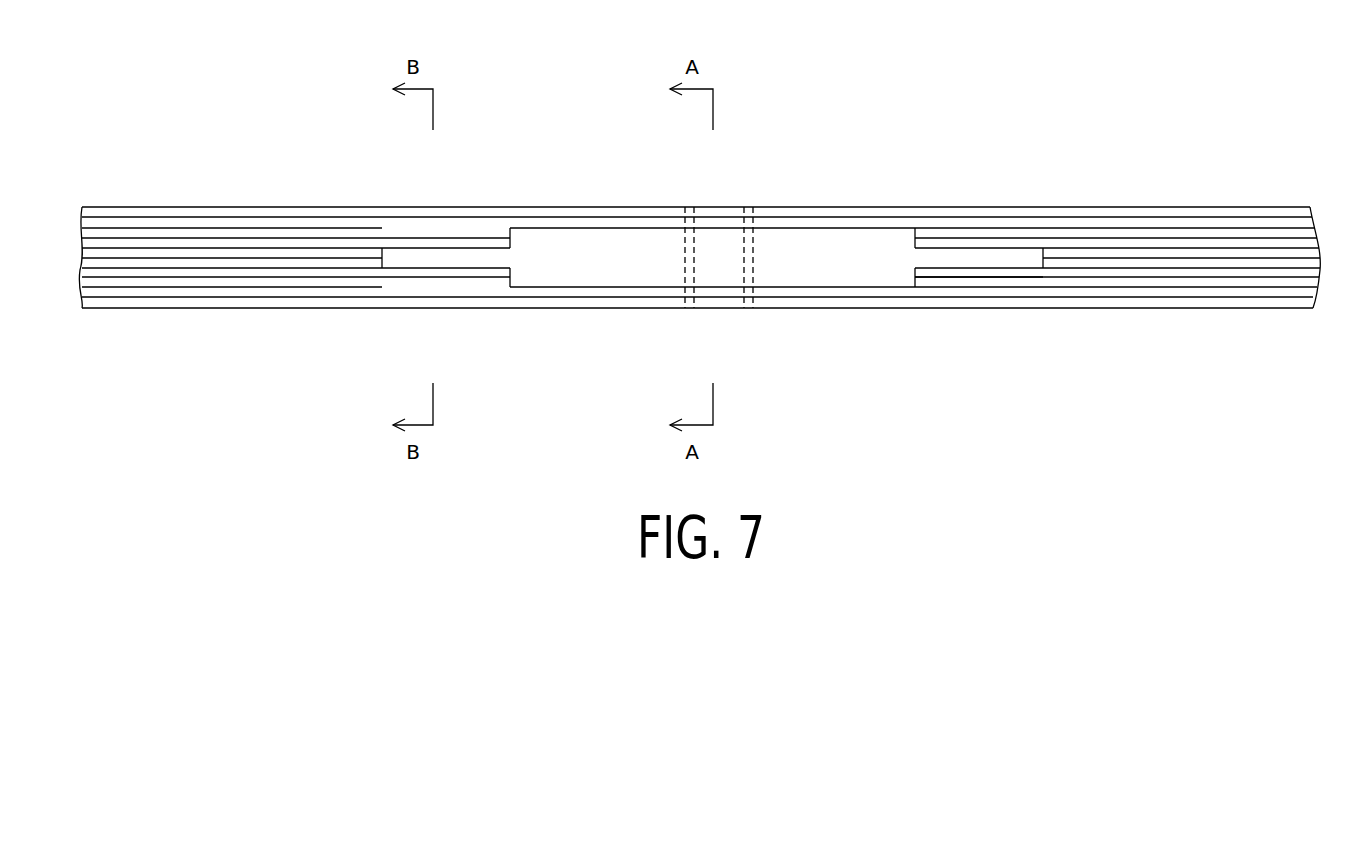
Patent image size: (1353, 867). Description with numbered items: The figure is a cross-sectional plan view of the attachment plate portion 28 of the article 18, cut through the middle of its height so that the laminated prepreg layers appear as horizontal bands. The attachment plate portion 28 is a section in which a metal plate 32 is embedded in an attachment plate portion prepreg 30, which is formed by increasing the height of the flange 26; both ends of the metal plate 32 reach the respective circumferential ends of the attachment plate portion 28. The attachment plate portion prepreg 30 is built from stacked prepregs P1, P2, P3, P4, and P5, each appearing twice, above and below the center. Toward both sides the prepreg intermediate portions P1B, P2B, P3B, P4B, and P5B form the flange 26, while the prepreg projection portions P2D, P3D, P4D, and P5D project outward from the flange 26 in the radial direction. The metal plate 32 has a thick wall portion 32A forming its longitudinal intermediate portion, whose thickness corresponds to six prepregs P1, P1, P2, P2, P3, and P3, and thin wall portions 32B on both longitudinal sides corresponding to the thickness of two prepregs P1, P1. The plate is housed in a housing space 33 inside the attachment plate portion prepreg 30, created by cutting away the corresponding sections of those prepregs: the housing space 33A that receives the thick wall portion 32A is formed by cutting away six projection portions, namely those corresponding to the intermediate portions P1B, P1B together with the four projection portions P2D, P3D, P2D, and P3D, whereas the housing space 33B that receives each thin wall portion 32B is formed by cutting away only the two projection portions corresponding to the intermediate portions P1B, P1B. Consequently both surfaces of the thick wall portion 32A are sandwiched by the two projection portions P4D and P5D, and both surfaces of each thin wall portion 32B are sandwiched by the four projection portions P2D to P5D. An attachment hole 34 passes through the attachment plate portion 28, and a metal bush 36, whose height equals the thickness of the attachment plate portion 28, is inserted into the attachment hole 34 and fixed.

The wiring board 18 is at (570, 113).
The flange 26 is at (143, 207).
The attachment plate portion 28 is at (795, 210).
The attachment plate portion prepreg 30 is at (535, 305).
The metal plate 32 is at (712, 346).
The thick wall portion 32A is at (590, 290).
The thin wall portion 32B is at (445, 270).
The housing space 33 is at (712, 173).
The housing space 33A is at (632, 230).
The housing space 33B is at (484, 243).
The attachment hole 34 is at (685, 257).
The metal bush 36 is at (740, 250).
The prepreg P1 is at (275, 253).
The prepreg P2 is at (252, 243).
The prepreg P3 is at (237, 233).
The prepreg P4 is at (213, 223).
The prepreg P5 is at (186, 210).
The prepreg intermediate portion P1B is at (1205, 252).
The prepreg intermediate portion P2B is at (1193, 242).
The prepreg intermediate portion P3B is at (1180, 233).
The prepreg intermediate portion P4B is at (1163, 223).
The prepreg intermediate portion P5B is at (1140, 210).
The prepreg projection portion P2D is at (1005, 243).
The prepreg projection portion P3D is at (980, 232).
The prepreg projection portion P4D is at (897, 223).
The prepreg projection portion P5D is at (868, 210).